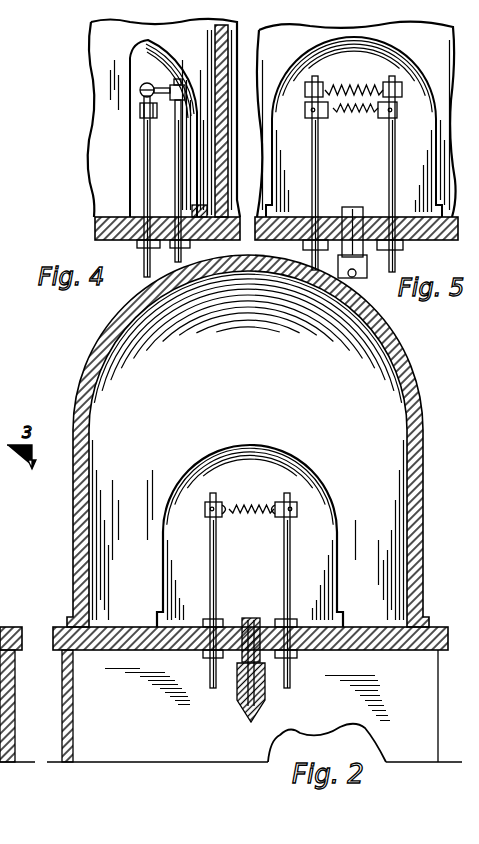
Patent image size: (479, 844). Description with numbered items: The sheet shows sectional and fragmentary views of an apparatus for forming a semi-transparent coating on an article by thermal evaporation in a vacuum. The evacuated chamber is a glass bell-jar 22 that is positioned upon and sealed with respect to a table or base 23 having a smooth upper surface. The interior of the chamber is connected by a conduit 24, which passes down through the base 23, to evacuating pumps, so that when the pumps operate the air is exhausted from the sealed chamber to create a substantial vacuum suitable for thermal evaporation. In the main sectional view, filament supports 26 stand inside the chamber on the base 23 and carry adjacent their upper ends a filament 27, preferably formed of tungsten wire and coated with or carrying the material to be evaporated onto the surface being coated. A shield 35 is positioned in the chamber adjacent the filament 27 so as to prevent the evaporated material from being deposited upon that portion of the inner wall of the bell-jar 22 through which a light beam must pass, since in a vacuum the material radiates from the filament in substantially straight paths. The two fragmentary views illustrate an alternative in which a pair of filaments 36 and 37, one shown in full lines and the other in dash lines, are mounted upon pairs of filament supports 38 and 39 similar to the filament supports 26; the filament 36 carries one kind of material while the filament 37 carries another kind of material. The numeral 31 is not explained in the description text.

In FIG. 2, the glass bell-jar 22 is at (405, 352).
In FIG. 4, the glass bell-jar 22 is at (227, 60).
In FIG. 5, the glass bell-jar 22 is at (268, 52).
In FIG. 2, the table or base 23 is at (385, 649).
In FIG. 4, the table or base 23 is at (95, 228).
In FIG. 5, the table or base 23 is at (422, 240).
In FIG. 2, the conduit 24 is at (266, 694).
In FIG. 5, the conduit 24 is at (353, 207).
In FIG. 2, the filament supports 26 is at (284, 569).
In FIG. 2, the filament 27 is at (250, 500).
In FIG. 2, the adjacent element 31 is at (7, 543).
In FIG. 2, the shield 35 is at (320, 488).
In FIG. 4, the shield 35 is at (140, 57).
In FIG. 5, the shield 35 is at (415, 64).
In FIG. 5, the filament 36 is at (352, 88).
In FIG. 5, the filament 37 is at (350, 118).
In FIG. 4, the filament supports 38 is at (146, 133).
In FIG. 5, the filament supports 38 is at (313, 153).
In FIG. 4, the filament supports 39 is at (176, 162).
In FIG. 5, the filament supports 39 is at (400, 90).